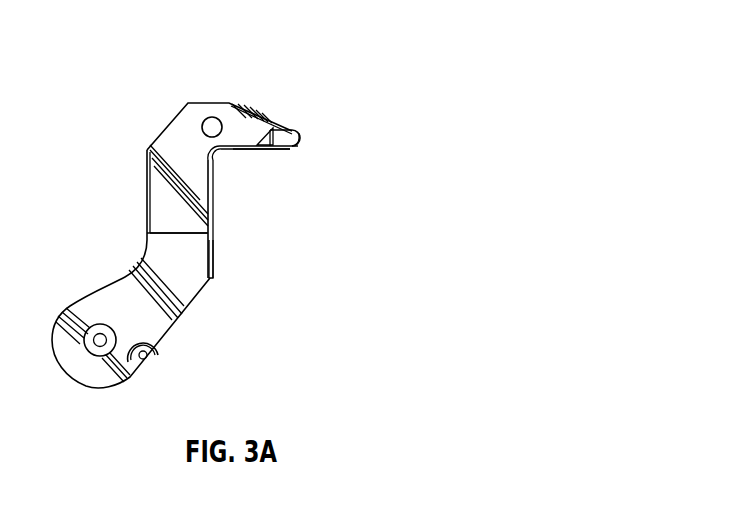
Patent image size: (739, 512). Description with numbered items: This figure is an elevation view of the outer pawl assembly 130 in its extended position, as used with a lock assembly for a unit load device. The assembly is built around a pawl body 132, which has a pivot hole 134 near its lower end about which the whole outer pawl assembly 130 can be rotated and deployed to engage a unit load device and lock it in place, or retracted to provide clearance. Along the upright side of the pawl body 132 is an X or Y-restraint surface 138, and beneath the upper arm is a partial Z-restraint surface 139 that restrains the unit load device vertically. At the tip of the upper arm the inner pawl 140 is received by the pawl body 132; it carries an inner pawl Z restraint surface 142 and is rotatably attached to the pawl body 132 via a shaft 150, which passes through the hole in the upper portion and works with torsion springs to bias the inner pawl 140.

The outer pawl assembly 130 is at (336, 34).
The pawl body 132 is at (197, 227).
The pivot hole 134 is at (100, 340).
The X or Y-restraint surface 138 is at (213, 262).
The partial Z-restraint surface 139 is at (237, 150).
The inner pawl 140 is at (289, 132).
The inner pawl Z restraint surface 142 is at (292, 148).
The shaft 150 is at (212, 127).